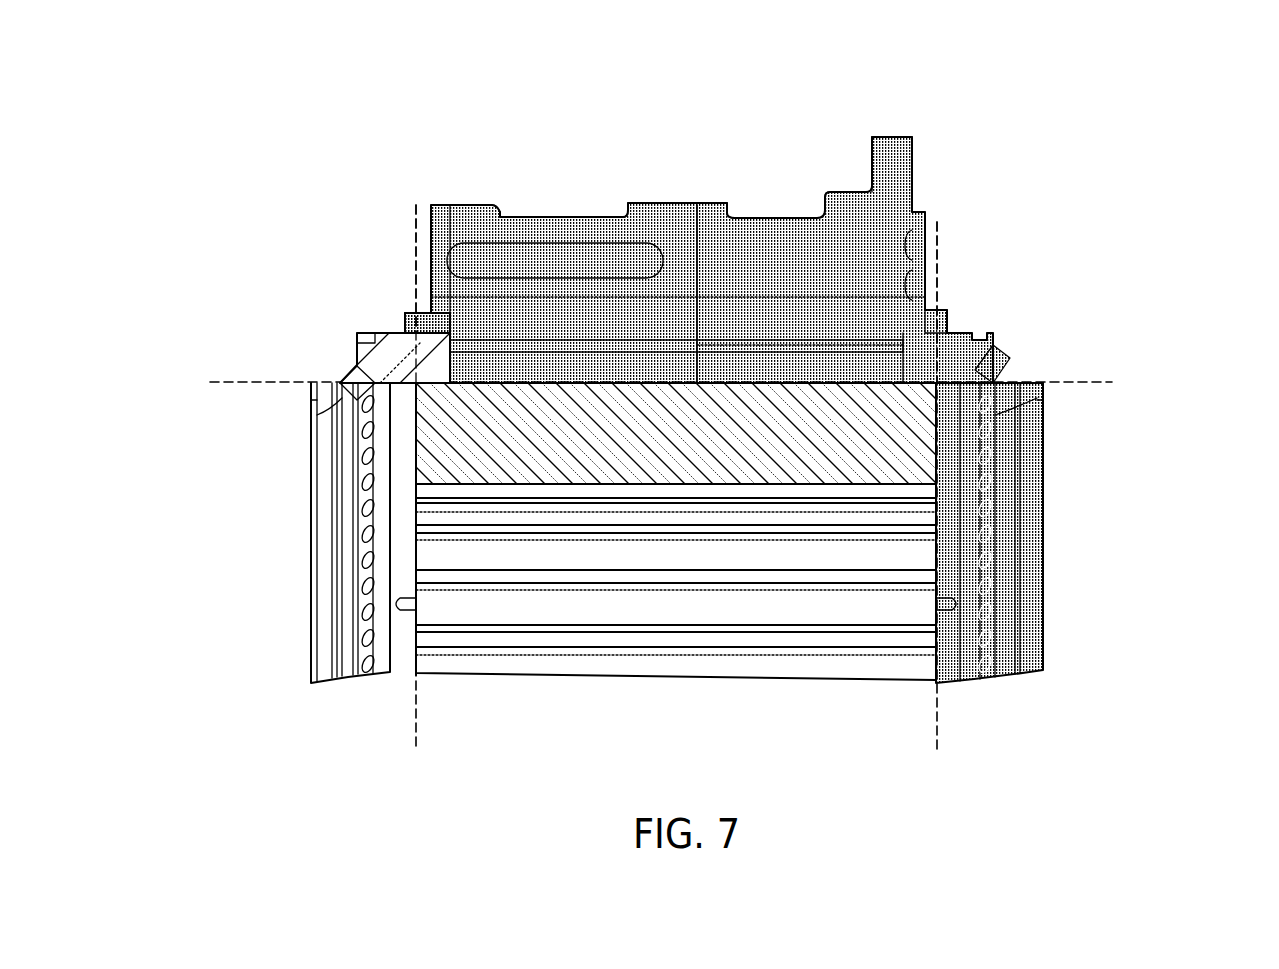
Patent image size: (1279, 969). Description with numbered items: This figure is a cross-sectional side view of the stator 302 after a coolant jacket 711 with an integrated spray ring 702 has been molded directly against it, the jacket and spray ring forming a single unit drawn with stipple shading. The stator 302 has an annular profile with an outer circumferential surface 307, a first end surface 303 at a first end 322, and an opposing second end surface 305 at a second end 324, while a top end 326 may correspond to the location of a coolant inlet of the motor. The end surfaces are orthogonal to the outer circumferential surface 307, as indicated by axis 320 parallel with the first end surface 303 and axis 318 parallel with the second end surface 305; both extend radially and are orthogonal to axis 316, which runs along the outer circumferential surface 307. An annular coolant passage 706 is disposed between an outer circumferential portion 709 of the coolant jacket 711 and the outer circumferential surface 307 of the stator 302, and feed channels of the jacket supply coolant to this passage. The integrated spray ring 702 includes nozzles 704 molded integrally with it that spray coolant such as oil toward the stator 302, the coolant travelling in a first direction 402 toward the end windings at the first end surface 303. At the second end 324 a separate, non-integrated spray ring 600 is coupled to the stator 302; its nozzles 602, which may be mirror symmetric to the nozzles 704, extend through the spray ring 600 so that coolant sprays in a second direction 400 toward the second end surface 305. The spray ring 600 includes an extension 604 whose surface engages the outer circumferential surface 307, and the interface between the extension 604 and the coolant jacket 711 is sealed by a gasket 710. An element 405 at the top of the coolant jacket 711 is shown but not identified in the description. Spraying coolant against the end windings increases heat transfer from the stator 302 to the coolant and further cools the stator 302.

The stator 302 is at (530, 375).
The first end surface 303 is at (415, 437).
The second end surface 305 is at (935, 435).
The outer circumferential surface 307 is at (650, 375).
The axis 316 is at (1030, 380).
The axis 318 is at (416, 225).
The axis 320 is at (940, 313).
The first end 322 is at (1200, 543).
The second end 324 is at (135, 543).
The top end 326 is at (642, 96).
The second direction 400 is at (395, 479).
The first direction 402 is at (958, 479).
The tab 405 is at (672, 205).
The spray ring 600 is at (395, 633).
The nozzles 602 is at (370, 622).
The extension 604 is at (388, 332).
The integrated spray ring 702 is at (995, 680).
The nozzles 704 is at (1000, 640).
The annular coolant passage 706 is at (770, 380).
The outer circumferential portion 709 is at (710, 205).
The gasket 710 is at (447, 330).
The coolant jacket 711 is at (925, 215).